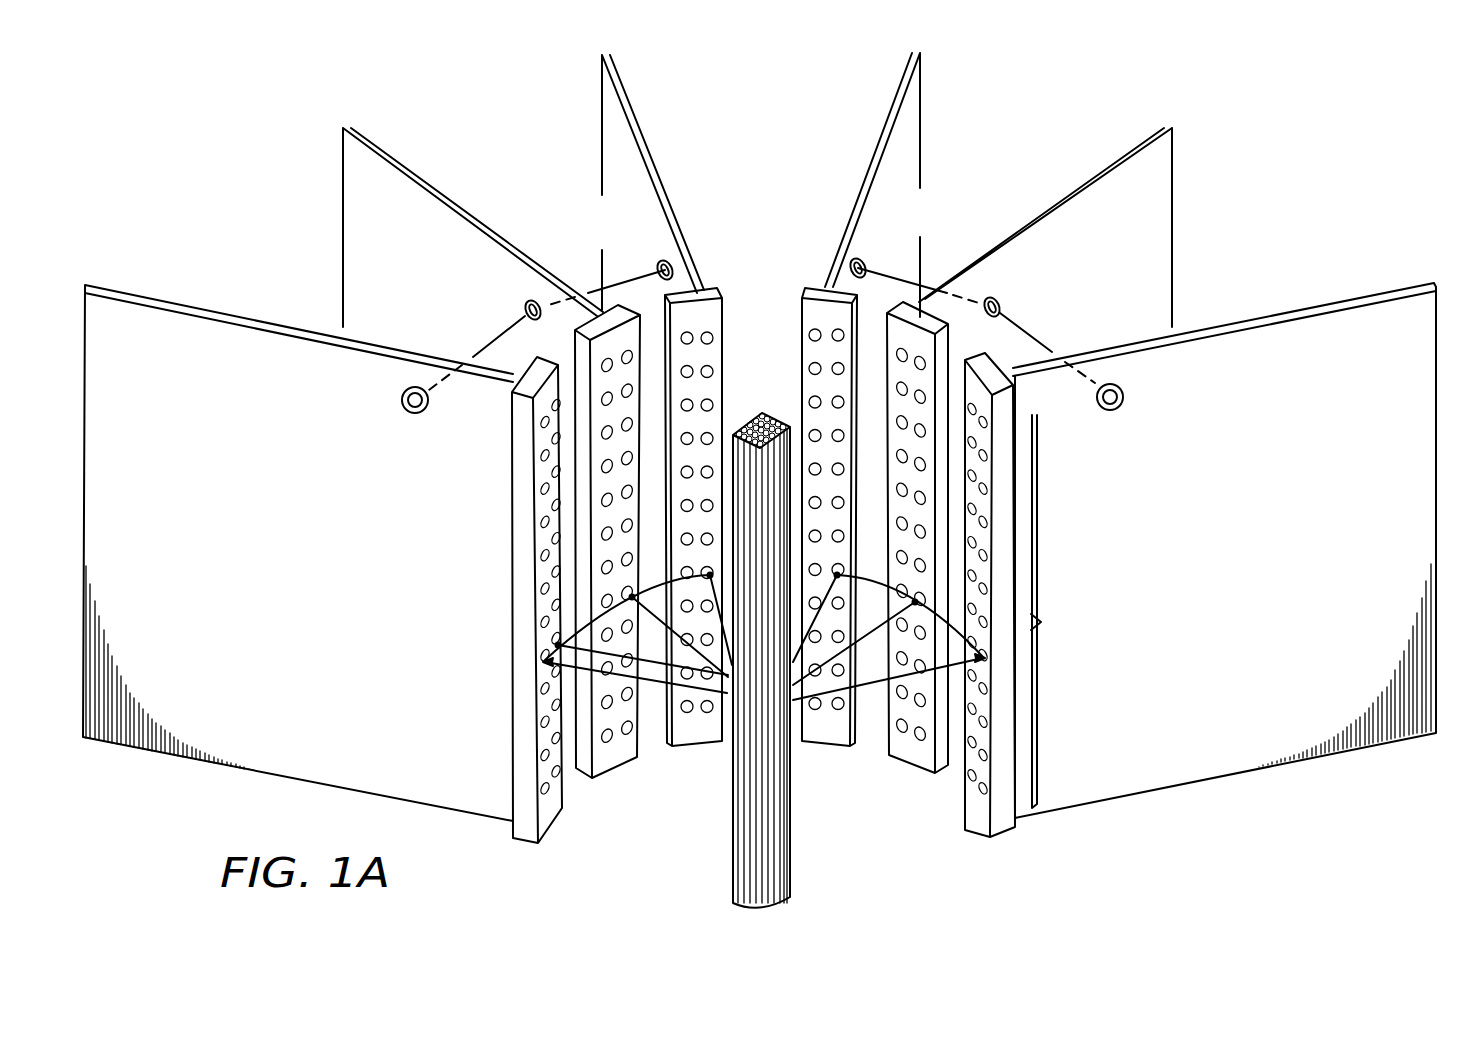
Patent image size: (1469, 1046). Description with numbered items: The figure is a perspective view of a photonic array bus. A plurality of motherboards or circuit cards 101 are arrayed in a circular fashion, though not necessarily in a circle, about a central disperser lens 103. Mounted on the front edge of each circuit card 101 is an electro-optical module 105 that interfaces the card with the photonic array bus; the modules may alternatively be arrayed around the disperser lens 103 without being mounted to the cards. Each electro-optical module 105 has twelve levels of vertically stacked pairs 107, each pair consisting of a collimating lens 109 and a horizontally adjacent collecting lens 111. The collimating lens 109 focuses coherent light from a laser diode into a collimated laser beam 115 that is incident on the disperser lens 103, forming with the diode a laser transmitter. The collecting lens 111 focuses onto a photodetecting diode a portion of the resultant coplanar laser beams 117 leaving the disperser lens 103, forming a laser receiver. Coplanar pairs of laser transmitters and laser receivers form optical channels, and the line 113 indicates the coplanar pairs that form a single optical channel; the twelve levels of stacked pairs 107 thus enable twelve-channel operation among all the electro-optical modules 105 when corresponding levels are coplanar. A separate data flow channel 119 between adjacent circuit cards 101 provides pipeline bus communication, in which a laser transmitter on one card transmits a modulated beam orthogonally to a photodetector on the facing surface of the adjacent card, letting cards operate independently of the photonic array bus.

The circuit cards 101 is at (405, 250).
The disperser lens 103 is at (757, 400).
The electro-optical module 105 is at (824, 748).
The vertically stacked pairs 107 is at (1059, 611).
The collimating lens 109 is at (771, 560).
The collecting lens 111 is at (763, 605).
The line 113 is at (568, 630).
The collimated laser beam 115 is at (698, 690).
The coplanar laser beams 117 is at (870, 682).
The data flow channel 119 is at (758, 295).